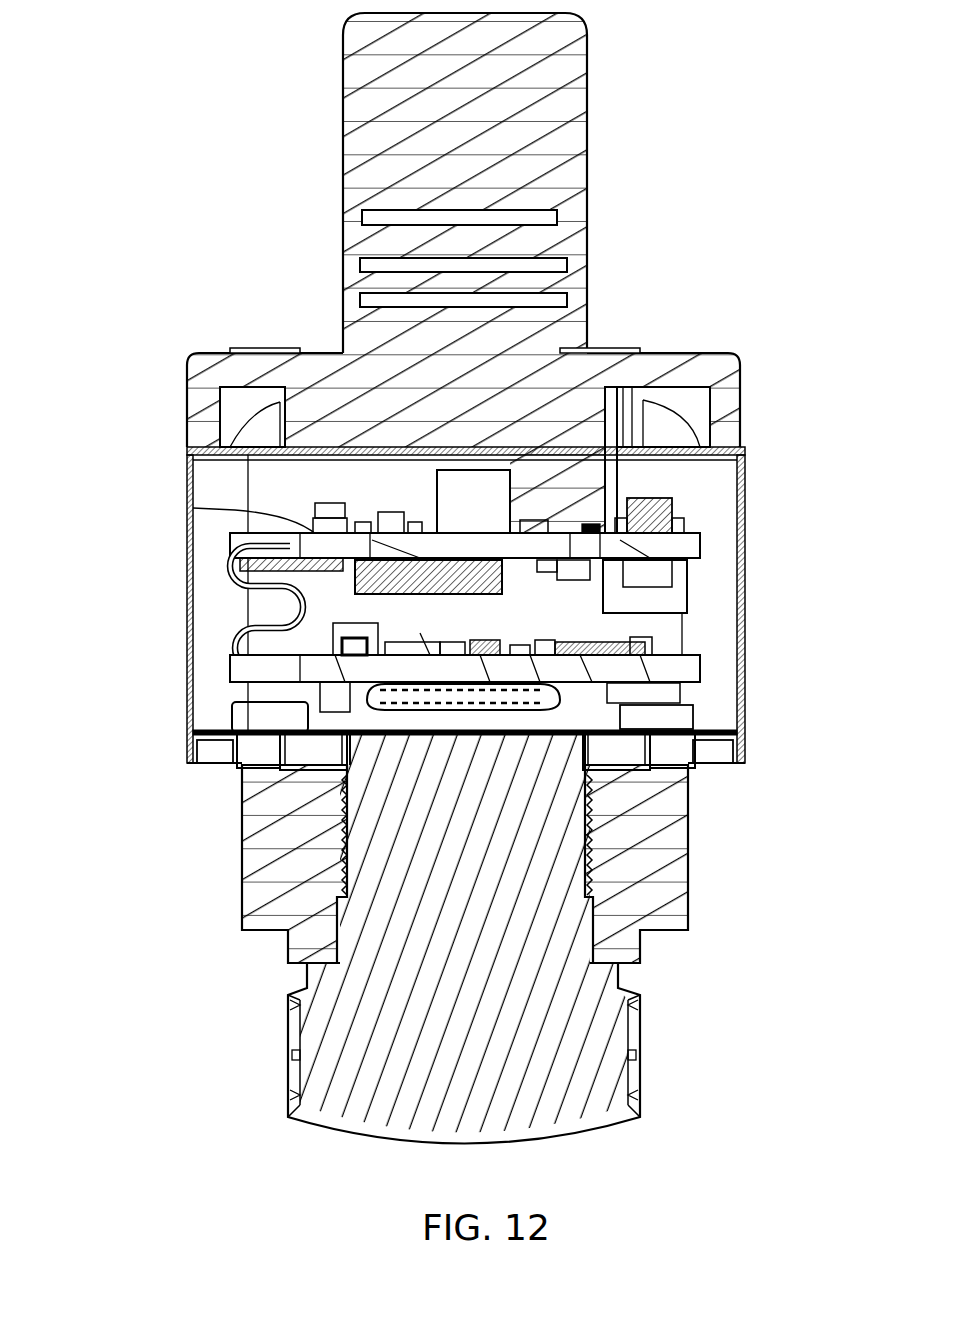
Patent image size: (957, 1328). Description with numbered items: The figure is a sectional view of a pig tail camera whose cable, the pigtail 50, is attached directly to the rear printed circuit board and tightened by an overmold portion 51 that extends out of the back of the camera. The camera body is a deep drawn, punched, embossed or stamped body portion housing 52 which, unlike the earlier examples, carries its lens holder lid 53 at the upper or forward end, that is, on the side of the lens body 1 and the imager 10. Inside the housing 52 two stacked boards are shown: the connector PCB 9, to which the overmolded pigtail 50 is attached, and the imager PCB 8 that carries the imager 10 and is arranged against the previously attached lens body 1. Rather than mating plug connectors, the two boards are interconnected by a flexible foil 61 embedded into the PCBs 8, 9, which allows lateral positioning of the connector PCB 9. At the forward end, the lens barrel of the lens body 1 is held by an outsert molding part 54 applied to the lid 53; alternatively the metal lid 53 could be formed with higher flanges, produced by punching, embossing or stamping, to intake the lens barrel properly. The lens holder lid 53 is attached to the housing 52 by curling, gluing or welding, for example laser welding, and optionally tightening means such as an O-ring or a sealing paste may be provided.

The pigtail 50 is at (702, 82).
The overmold portion 51 is at (585, 212).
The body portion housing 52 is at (745, 620).
The connector PCB 9 is at (322, 542).
The flexible foil 61 is at (228, 589).
The imager PCB 8 is at (227, 673).
The imager 10 is at (445, 706).
The lens holder lid 53 is at (750, 690).
The outsert molding part 54 is at (668, 877).
The lens body 1 is at (602, 1077).